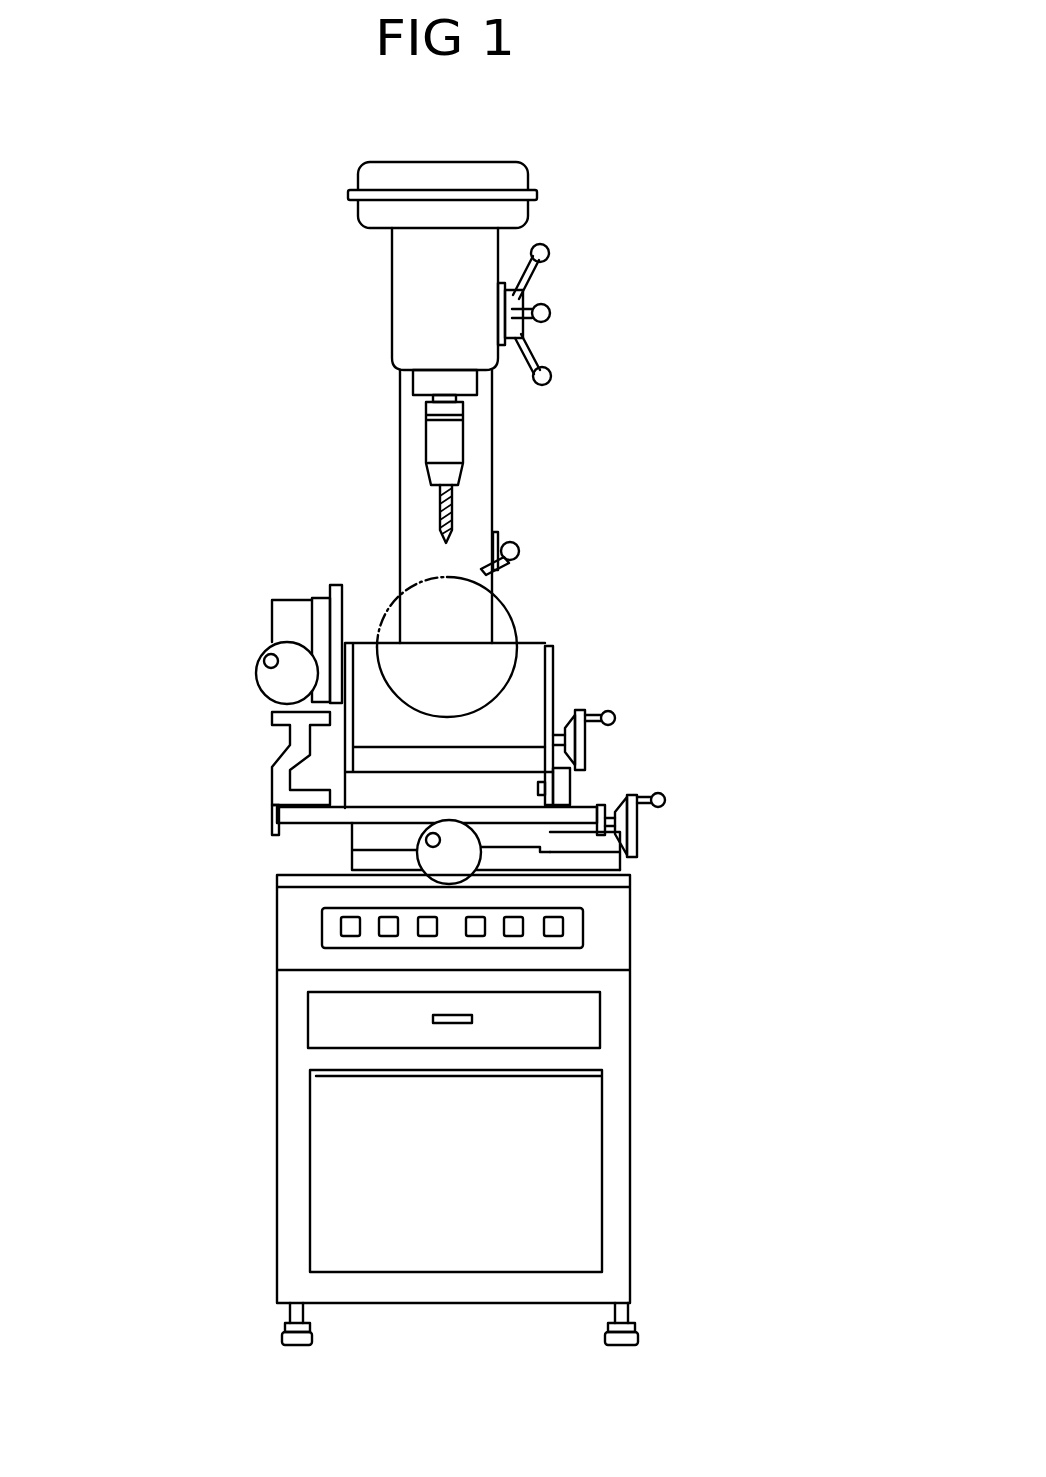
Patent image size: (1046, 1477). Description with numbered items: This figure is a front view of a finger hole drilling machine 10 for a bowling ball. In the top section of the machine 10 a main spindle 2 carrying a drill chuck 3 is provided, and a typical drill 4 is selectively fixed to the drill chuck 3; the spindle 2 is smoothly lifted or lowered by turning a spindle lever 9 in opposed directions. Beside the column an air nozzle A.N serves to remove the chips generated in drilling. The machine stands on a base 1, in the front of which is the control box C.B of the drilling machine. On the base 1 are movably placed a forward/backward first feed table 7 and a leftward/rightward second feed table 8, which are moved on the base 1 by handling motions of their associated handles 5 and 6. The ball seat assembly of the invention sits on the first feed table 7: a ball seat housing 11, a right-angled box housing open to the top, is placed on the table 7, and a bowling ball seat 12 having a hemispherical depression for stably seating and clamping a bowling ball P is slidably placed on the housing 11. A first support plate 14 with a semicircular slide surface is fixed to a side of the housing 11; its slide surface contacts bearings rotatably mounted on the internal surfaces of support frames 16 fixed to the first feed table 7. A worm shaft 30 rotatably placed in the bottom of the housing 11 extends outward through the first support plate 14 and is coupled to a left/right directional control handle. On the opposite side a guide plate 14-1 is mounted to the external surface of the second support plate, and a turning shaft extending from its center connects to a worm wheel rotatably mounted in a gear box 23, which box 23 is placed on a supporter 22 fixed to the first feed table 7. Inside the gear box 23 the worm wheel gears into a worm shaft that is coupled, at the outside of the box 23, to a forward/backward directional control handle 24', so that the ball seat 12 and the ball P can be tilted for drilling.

The base 1 is at (287, 927).
The main spindle 2 is at (420, 385).
The drill chuck 3 is at (462, 443).
The drill 4 is at (450, 503).
The handle 5 is at (660, 803).
The handle 6 is at (425, 856).
The first feed table 7 is at (366, 836).
The second feed table 8 is at (632, 862).
The spindle lever 9 is at (545, 258).
The finger hole drilling machine 10 is at (668, 518).
The ball seat housing 11 is at (530, 663).
The bowling ball seat 12 is at (498, 660).
The first support plate 14 is at (553, 673).
The guide plate 14-1 is at (315, 600).
The support frame 16 is at (567, 787).
The supporter 22 is at (272, 716).
The gear box 23 is at (272, 603).
The forward/backward directional control handle 24' is at (250, 652).
The worm shaft 30 is at (587, 752).
The air nozzle A.N is at (516, 547).
The control box C.B is at (575, 931).
The bowling ball P is at (392, 608).